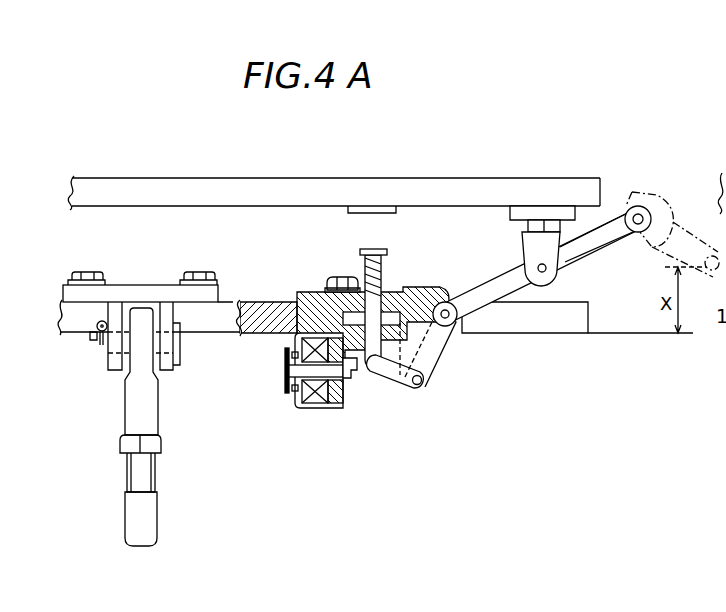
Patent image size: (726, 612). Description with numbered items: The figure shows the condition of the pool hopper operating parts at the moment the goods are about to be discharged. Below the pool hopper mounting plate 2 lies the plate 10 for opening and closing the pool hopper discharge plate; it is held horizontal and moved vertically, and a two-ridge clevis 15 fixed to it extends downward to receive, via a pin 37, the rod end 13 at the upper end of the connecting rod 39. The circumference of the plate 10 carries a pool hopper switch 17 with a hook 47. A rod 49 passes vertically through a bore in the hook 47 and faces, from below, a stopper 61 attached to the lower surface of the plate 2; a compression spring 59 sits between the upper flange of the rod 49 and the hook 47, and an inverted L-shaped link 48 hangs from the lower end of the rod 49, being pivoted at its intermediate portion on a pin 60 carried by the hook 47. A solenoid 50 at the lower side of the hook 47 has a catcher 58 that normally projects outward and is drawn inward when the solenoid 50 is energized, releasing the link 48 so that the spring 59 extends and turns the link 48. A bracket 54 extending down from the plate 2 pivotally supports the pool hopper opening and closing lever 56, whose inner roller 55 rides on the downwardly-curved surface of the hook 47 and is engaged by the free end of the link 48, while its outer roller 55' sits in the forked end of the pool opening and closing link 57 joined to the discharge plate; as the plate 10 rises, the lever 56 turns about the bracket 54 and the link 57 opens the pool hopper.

The pool hopper mounting plate 2 is at (300, 186).
The plate for opening and closing the discharge plate of the pool hopper 10 is at (238, 306).
The rod end 13 is at (130, 412).
The two-ridge clevis 15 is at (170, 372).
The pool hopper switch 17 is at (290, 298).
The pin 37 is at (88, 350).
The connecting rod 39 is at (157, 508).
The hook 47 is at (445, 300).
The inverted L-shaped link 48 is at (395, 372).
The rod 49 is at (382, 249).
The solenoid 50 is at (297, 405).
The bracket 54 is at (522, 249).
The inner roller 55 is at (541, 297).
The outer roller 55' is at (640, 194).
The pool hopper opening and closing lever 56 is at (592, 252).
The pool opening and closing link 57 is at (692, 240).
The catcher 58 is at (352, 380).
The compression spring 59 is at (388, 271).
The pin 60 is at (422, 386).
The stopper 61 is at (352, 208).